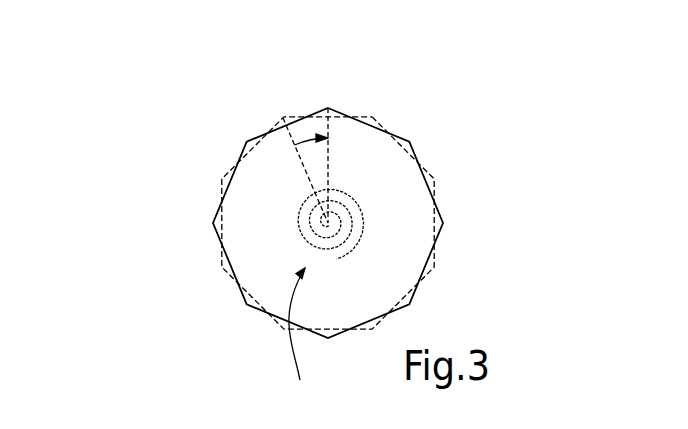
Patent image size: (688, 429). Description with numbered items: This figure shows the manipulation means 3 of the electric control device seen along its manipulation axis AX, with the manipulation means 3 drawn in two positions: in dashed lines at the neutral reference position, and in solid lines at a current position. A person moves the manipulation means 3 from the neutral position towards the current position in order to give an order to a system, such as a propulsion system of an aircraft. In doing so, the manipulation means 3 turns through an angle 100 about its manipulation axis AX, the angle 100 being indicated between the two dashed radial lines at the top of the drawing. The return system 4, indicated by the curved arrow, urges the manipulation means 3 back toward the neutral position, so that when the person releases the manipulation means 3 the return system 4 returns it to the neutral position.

The manipulation means 3 is at (415, 138).
The return system 4 is at (297, 335).
The manipulation axis AX is at (330, 222).
The angle 100 is at (307, 140).